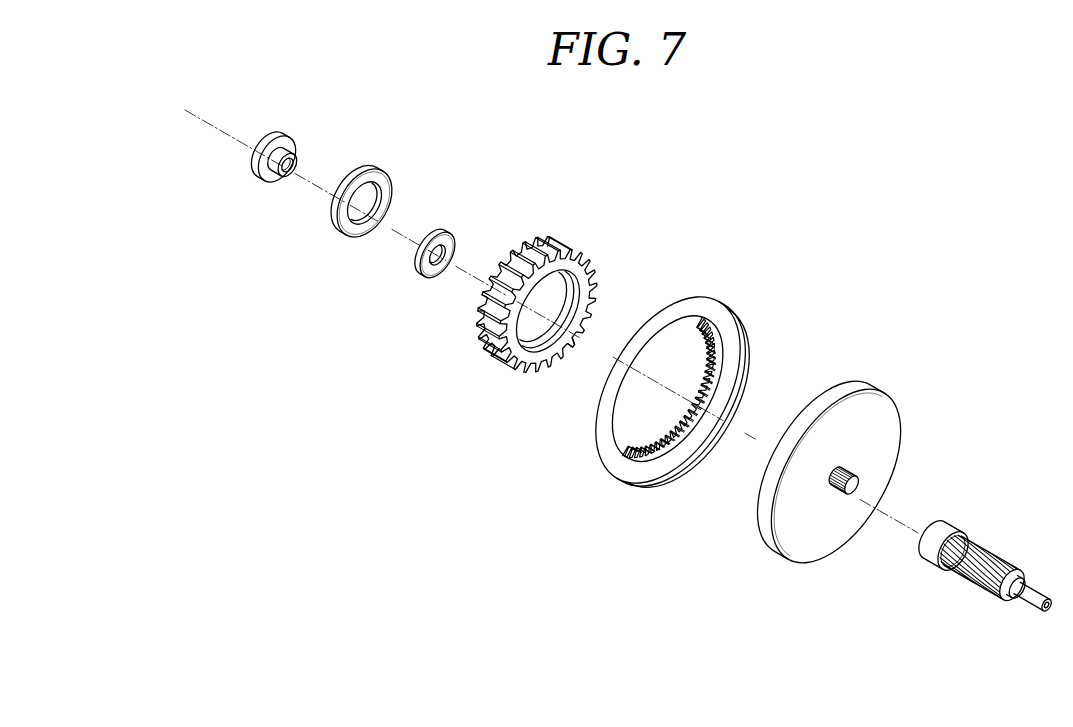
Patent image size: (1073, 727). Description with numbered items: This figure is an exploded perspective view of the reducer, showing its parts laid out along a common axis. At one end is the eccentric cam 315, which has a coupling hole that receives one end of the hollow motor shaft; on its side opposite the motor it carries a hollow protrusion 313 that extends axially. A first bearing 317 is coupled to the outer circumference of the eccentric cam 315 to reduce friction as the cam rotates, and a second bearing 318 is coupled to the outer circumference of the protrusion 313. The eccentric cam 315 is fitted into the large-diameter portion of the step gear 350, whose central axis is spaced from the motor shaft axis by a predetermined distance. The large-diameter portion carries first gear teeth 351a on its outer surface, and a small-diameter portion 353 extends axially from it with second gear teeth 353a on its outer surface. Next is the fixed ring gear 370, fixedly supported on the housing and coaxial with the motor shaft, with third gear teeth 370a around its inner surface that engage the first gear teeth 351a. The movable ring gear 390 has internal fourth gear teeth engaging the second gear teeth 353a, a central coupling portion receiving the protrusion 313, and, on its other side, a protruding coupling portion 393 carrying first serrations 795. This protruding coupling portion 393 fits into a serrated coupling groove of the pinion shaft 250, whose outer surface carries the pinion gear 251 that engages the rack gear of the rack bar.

The pinion shaft 250 is at (987, 547).
The pinion gear 251 is at (972, 583).
The protrusion 313 is at (283, 174).
The eccentric cam 315 is at (306, 145).
The first bearing 317 is at (388, 163).
The second bearing 318 is at (453, 223).
The step gear 350 is at (546, 292).
The first gear teeth 351a is at (521, 244).
The small-diameter portion 353 is at (520, 368).
The second gear teeth 353a is at (498, 363).
The fixed ring gear 370 is at (684, 373).
The third gear teeth 370a is at (658, 465).
The movable ring gear 390 is at (836, 465).
The protruding coupling portion 393 is at (834, 507).
The first serrations 795 is at (847, 475).